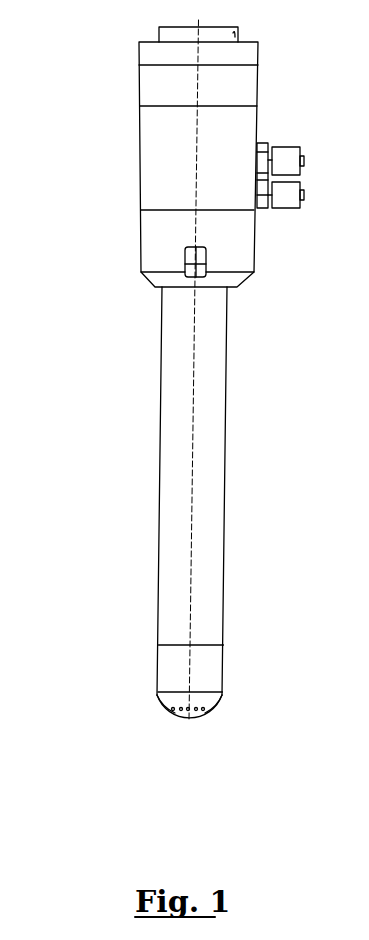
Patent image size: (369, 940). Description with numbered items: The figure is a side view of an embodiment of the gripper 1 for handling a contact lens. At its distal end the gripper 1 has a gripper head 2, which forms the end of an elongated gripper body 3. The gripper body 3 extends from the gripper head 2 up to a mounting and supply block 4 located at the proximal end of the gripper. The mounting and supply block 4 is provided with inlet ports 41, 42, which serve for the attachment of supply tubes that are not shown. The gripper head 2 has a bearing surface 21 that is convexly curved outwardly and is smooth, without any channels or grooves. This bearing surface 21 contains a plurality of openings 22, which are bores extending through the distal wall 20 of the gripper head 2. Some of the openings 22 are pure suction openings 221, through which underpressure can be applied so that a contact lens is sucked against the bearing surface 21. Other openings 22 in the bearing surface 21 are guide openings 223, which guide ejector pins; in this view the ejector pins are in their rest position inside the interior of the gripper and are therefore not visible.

The gripper 1 is at (187, 412).
The gripper head 2 is at (188, 658).
The elongated gripper body 3 is at (161, 428).
The mounting and supply block 4 is at (142, 123).
The inlet port 41 is at (262, 145).
The inlet port 42 is at (270, 205).
The distal wall 20 is at (162, 702).
The bearing surface 21 is at (214, 699).
The openings 22 is at (176, 740).
The suction openings 221 is at (181, 707).
The guide openings 223 is at (204, 711).